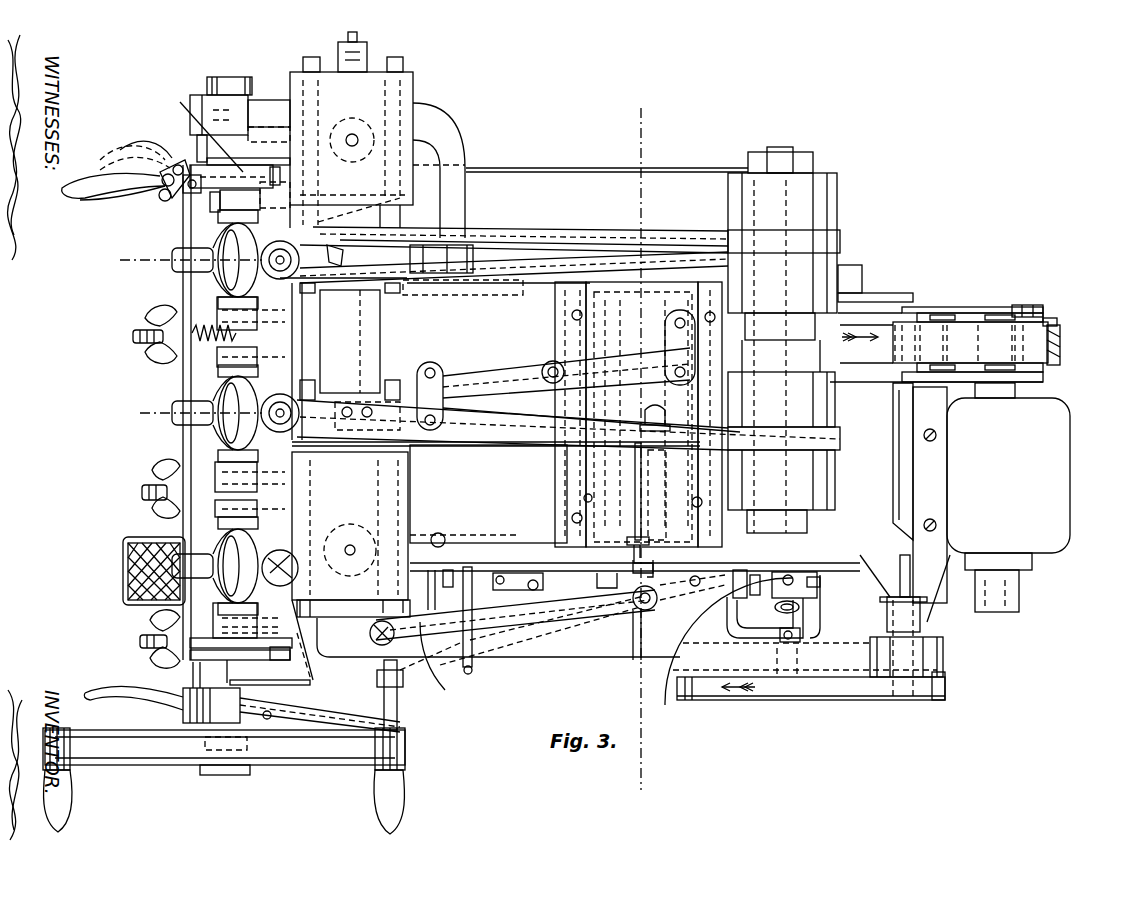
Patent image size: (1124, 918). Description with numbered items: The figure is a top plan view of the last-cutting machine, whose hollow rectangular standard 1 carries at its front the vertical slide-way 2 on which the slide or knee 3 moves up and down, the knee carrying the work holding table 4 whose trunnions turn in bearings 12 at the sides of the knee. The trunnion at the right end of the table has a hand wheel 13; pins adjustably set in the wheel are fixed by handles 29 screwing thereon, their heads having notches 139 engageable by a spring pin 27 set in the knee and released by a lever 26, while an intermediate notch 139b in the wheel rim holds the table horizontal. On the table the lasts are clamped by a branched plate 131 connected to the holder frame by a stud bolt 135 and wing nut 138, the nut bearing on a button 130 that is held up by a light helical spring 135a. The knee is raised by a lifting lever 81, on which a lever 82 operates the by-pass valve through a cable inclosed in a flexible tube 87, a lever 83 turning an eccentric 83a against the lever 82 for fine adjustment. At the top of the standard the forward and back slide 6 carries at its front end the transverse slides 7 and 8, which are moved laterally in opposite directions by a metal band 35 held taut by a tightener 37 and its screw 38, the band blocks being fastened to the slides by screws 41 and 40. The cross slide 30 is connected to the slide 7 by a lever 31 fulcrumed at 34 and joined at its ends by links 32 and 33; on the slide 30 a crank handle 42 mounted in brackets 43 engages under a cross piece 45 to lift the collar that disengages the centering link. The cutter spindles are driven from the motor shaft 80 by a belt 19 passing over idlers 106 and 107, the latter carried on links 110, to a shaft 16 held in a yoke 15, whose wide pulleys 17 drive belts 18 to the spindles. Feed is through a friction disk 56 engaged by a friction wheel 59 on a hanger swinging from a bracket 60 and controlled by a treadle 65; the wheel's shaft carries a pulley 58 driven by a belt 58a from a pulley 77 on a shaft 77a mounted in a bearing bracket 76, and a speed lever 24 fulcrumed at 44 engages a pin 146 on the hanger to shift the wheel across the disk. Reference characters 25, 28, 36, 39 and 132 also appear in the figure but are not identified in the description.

The standard 1 is at (590, 170).
The vertical slide-way 2 is at (641, 448).
The slide or knee 3 is at (290, 105).
The work holding table 4 is at (205, 160).
The forward and back slide 6 is at (885, 295).
The transverse slide 7 is at (412, 540).
The transverse slide 8 is at (395, 170).
The bearings 12 is at (205, 90).
The hand wheel 13 is at (406, 770).
The yoke 15 is at (795, 150).
The shaft 16 is at (778, 150).
The wide pulleys 17 is at (838, 196).
The belts 18 is at (840, 244).
The belt 19 is at (1060, 343).
The speed lever 24 is at (528, 626).
The pin 25 is at (470, 674).
The lever 26 is at (175, 692).
The spring pin 27 is at (399, 712).
The nut 28 is at (377, 680).
The handles 29 is at (62, 805).
The transverse slide 30 is at (638, 414).
The lever 31 is at (591, 390).
The link 32 is at (667, 333).
The link 33 is at (422, 378).
The fulcrum 34 is at (548, 364).
The metal band 35 is at (378, 320).
The shaft bore 36 is at (375, 140).
The tightener 37 is at (367, 50).
The screw 38 is at (348, 38).
The lug 39 is at (303, 65).
The screws 40 is at (345, 412).
The screw 41 is at (400, 226).
The crank handle 42 is at (661, 495).
The brackets 43 is at (630, 541).
The fulcrum 44 is at (637, 612).
The cross piece 45 is at (660, 415).
The friction disk 56 is at (665, 705).
The pulley 58 is at (820, 702).
The belt 58a is at (946, 686).
The friction wheel 59 is at (820, 583).
The bracket 60 is at (807, 638).
The treadle 65 is at (125, 590).
The bearing bracket 76 is at (930, 575).
The pulley 77 is at (912, 702).
The shaft 77a is at (918, 460).
The motor shaft 80 is at (996, 614).
The lifting lever 81 is at (100, 192).
The lever 82 is at (135, 152).
The lever 83 is at (165, 188).
The eccentric 83a is at (190, 200).
The flexible tube 87 is at (200, 125).
The idler 106 is at (928, 306).
The idler 107 is at (1057, 320).
The links 110 is at (1000, 318).
The button 130 is at (185, 305).
The branched plate 131 is at (185, 385).
The spring arm 132 is at (180, 532).
The stud bolt 135 is at (133, 337).
The helical spring 135a is at (186, 376).
The wing nut 138 is at (150, 320).
The notches 139 is at (60, 730).
The intermediate notch 139b is at (215, 750).
The pin 146 is at (806, 612).